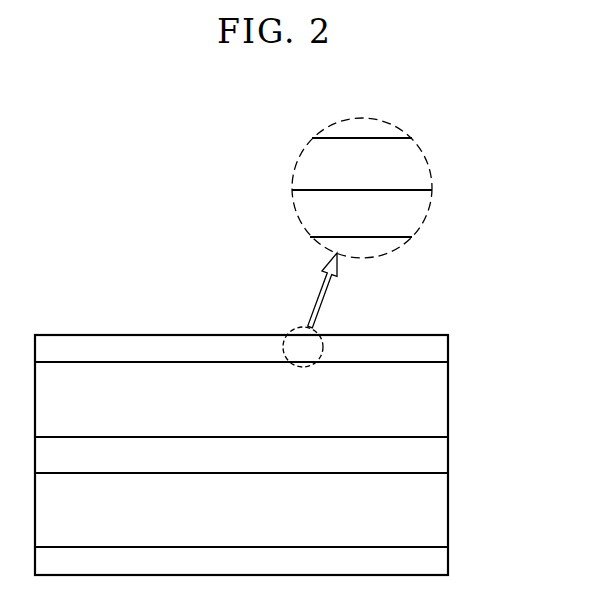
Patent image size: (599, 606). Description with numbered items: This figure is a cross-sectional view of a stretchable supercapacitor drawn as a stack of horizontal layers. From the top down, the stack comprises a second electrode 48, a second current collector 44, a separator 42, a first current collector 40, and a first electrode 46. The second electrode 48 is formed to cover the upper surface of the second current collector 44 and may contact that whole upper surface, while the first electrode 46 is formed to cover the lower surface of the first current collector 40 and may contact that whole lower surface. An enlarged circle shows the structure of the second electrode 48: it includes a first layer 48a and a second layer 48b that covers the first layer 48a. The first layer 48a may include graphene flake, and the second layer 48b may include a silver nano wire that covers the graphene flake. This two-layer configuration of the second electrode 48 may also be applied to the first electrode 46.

The first current collector 40 is at (445, 515).
The separator 42 is at (445, 457).
The second current collector 44 is at (445, 400).
The first electrode 46 is at (445, 562).
The second electrode 48 is at (445, 350).
The first layer 48a is at (415, 211).
The second layer 48b is at (415, 164).